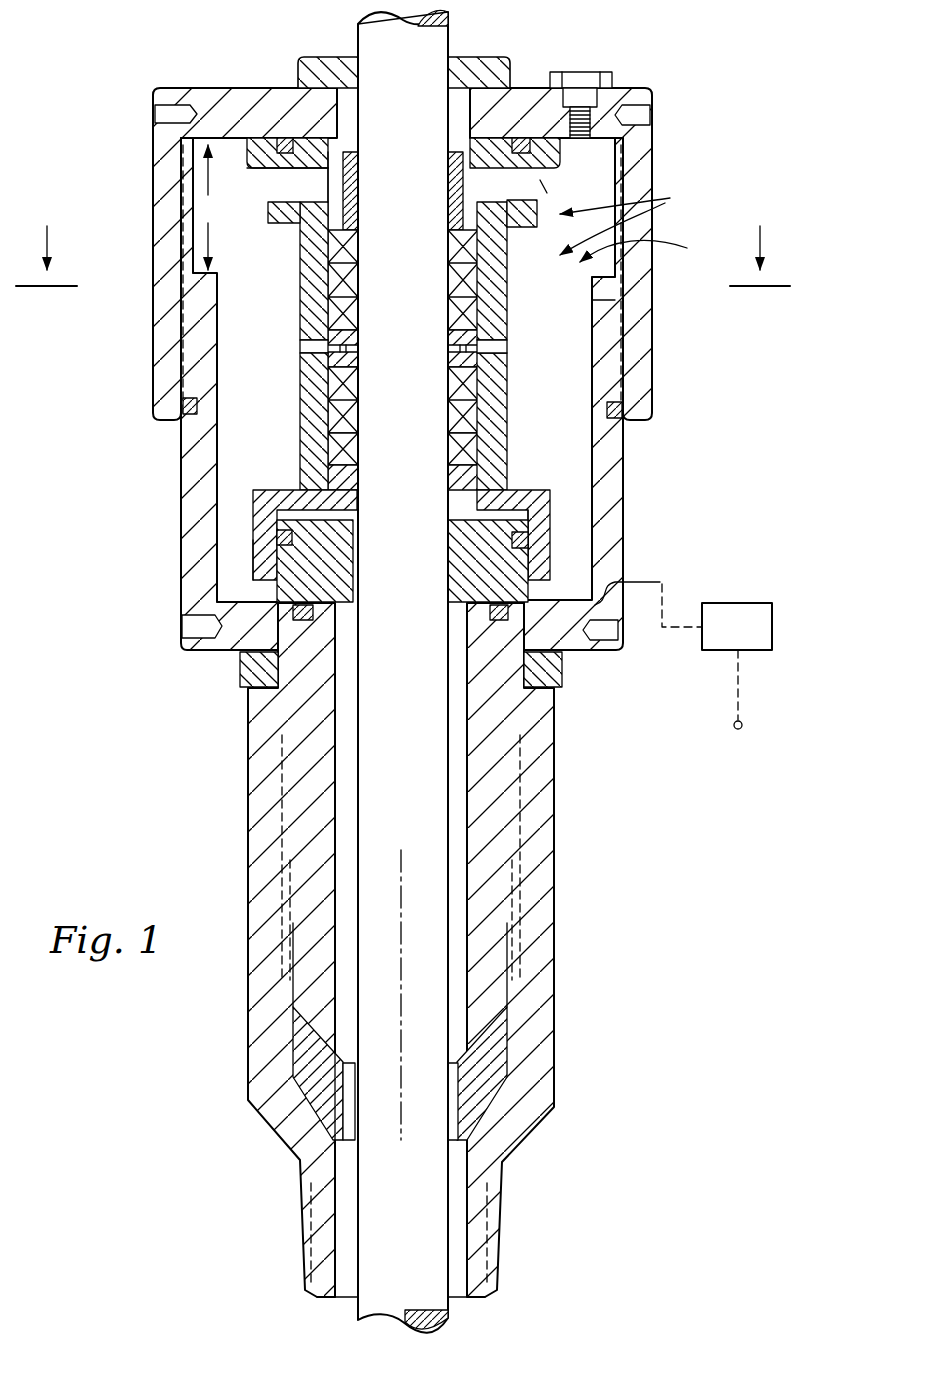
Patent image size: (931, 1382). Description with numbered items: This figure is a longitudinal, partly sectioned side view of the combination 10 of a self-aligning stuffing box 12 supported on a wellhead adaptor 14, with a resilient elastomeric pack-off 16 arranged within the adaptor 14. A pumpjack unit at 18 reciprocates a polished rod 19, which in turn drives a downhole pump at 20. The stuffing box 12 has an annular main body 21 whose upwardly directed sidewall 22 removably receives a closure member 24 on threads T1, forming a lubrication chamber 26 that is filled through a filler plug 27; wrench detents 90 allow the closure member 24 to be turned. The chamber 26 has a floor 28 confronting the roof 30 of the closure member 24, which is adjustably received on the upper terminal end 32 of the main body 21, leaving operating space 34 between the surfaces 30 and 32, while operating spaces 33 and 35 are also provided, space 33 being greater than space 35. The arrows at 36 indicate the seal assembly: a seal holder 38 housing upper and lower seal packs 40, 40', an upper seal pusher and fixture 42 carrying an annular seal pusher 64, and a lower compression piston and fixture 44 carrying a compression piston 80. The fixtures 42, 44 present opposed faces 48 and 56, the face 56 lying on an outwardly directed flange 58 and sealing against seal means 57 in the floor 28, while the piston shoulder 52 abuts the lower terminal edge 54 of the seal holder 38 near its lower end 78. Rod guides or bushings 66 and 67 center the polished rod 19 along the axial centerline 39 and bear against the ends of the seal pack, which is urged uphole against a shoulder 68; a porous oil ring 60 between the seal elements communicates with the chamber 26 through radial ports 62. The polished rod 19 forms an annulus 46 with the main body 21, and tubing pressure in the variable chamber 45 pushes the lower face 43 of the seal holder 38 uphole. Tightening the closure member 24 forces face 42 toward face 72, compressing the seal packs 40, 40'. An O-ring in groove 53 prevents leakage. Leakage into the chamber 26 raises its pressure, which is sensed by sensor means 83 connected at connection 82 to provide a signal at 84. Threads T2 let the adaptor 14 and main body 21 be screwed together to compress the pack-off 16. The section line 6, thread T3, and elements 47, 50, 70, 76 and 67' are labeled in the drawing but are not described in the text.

The combination 10 is at (118, 650).
The self-aligning stuffing box 12 is at (146, 330).
The wellhead adaptor 14 is at (568, 980).
The resilient pack-off 16 is at (510, 1052).
The pumpjack unit location 18 is at (690, 22).
The polished rod 19 is at (408, 1208).
The downhole pump location 20 is at (545, 1330).
The main body 21 is at (633, 495).
The sidewall 22 is at (582, 430).
The closure member 24 is at (660, 395).
The chamber 26 is at (646, 249).
The filler plug 27 is at (582, 72).
The floor 28 is at (617, 575).
The roof 30 is at (605, 143).
The upper terminal end 32 is at (653, 268).
The operating space 33 is at (120, 553).
The operating space 34 is at (212, 207).
The operating space 35 is at (122, 172).
The seal assembly 36 is at (632, 222).
The seal holder 38 is at (296, 330).
The axial centerline 39 is at (401, 852).
The seal pack 40 is at (286, 271).
The lower seal pack 40' is at (282, 421).
The upper seal pusher and fixture 42 is at (268, 176).
The lower face 43 is at (307, 538).
The lower seal compression piston and fixture 44 is at (362, 583).
The variable chamber 45 is at (355, 518).
The annulus 46 is at (345, 703).
The right seal housing block 47 is at (450, 548).
The upper face 48 is at (335, 108).
The right retainer plate 50 is at (513, 504).
The shoulder 52 is at (540, 180).
The O-ring groove 53 is at (522, 140).
The lower terminal edge 54 is at (240, 663).
The lower face 56 is at (325, 618).
The seal means 57 is at (450, 625).
The outwardly directed flange 58 is at (210, 585).
The porous annular oil ring 60 is at (447, 340).
The radial ports 62 is at (503, 348).
The seal pusher 64 is at (480, 198).
The rod guide 66 is at (447, 193).
The lower bushing 67 is at (403, 469).
The lower bearing 67' is at (403, 421).
The shoulder 68 is at (447, 240).
The bushing flange 70 is at (268, 213).
The face 72 is at (296, 183).
The right bushing 76 is at (503, 287).
The lower end 78 is at (552, 520).
The compression piston 80 is at (275, 556).
The connection 82 is at (662, 584).
The sensor means 83 is at (737, 626).
The signal 84 is at (744, 723).
The wrench detents 90 is at (650, 115).
The threaded coacting surfaces T1 is at (183, 392).
The threaded coacting surfaces T2 is at (522, 878).
The thread T3 is at (500, 1244).
The section line 6- 6 is at (403, 241).